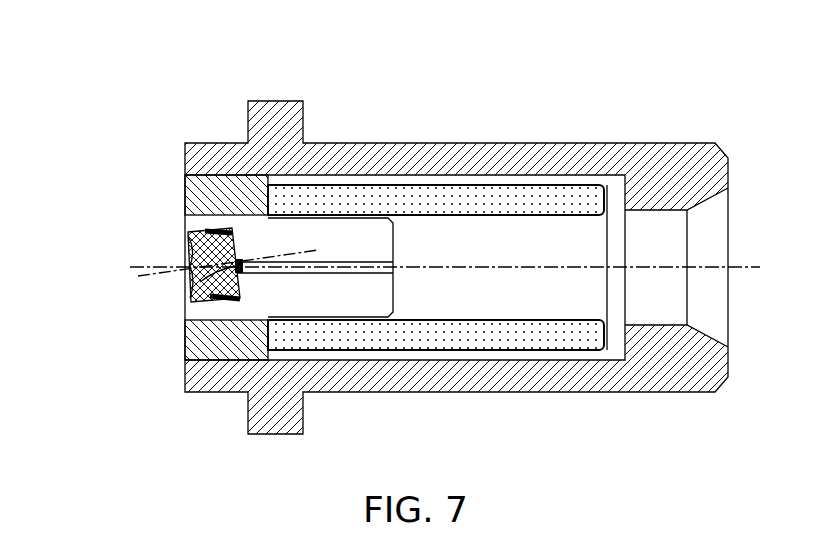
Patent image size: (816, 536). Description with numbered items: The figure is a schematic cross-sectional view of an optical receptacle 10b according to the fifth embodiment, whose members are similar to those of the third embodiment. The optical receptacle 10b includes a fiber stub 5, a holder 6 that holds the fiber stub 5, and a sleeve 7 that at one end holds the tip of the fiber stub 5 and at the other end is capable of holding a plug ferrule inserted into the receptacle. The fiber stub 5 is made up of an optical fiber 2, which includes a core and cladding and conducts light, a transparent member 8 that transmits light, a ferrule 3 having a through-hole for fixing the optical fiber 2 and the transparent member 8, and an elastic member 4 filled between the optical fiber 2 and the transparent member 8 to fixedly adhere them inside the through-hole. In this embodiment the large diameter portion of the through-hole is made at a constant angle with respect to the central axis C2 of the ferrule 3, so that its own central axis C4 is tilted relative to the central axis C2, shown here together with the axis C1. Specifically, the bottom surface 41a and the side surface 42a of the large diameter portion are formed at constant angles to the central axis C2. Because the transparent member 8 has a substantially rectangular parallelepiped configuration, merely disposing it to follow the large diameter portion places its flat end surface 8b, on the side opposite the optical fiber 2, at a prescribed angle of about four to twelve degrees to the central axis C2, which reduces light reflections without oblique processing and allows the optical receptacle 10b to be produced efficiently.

The optical receptacle 10b is at (575, 70).
The fiber stub 5 is at (388, 67).
The transparent member 8 is at (145, 197).
The elastic member 4 is at (239, 258).
The ferrule 3 is at (341, 236).
The optical fiber 2 is at (371, 262).
The holder 6 is at (493, 158).
The sleeve 7 is at (575, 195).
The central axis C1 is at (445, 181).
The central axis of the ferrule C2 is at (657, 268).
The central axis of the large diameter portion C4 is at (305, 253).
The side surface of the large diameter portion 42a is at (187, 258).
The end surface of the transparent member 8b is at (187, 259).
The bottom surface of the large diameter portion 41a is at (188, 283).